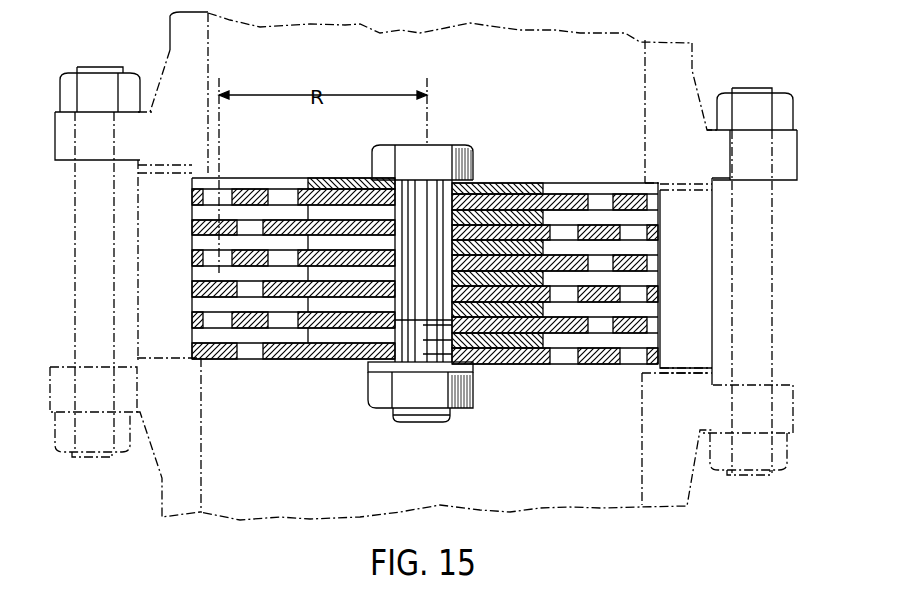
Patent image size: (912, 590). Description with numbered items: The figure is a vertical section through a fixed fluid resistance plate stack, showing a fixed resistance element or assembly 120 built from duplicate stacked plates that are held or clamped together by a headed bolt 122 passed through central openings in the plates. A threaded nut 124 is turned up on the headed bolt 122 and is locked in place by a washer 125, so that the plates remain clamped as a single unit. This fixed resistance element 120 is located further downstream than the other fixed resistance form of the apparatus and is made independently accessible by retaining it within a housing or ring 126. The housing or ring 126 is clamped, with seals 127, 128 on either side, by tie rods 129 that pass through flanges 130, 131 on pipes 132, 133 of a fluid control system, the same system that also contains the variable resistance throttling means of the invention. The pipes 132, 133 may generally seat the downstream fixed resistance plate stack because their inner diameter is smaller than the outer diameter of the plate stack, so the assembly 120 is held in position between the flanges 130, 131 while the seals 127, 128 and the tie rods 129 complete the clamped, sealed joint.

The fixed resistance element 120 is at (537, 174).
The headed bolt 122 is at (384, 159).
The threaded nut 124 is at (382, 392).
The washer 125 is at (467, 368).
The housing or ring 126 is at (690, 235).
The seal 127 is at (698, 184).
The seal 128 is at (698, 368).
The tie rod 129 is at (84, 270).
The flange 130 is at (68, 150).
The flange 131 is at (72, 375).
The pipe 132 is at (186, 46).
The pipe 133 is at (173, 475).